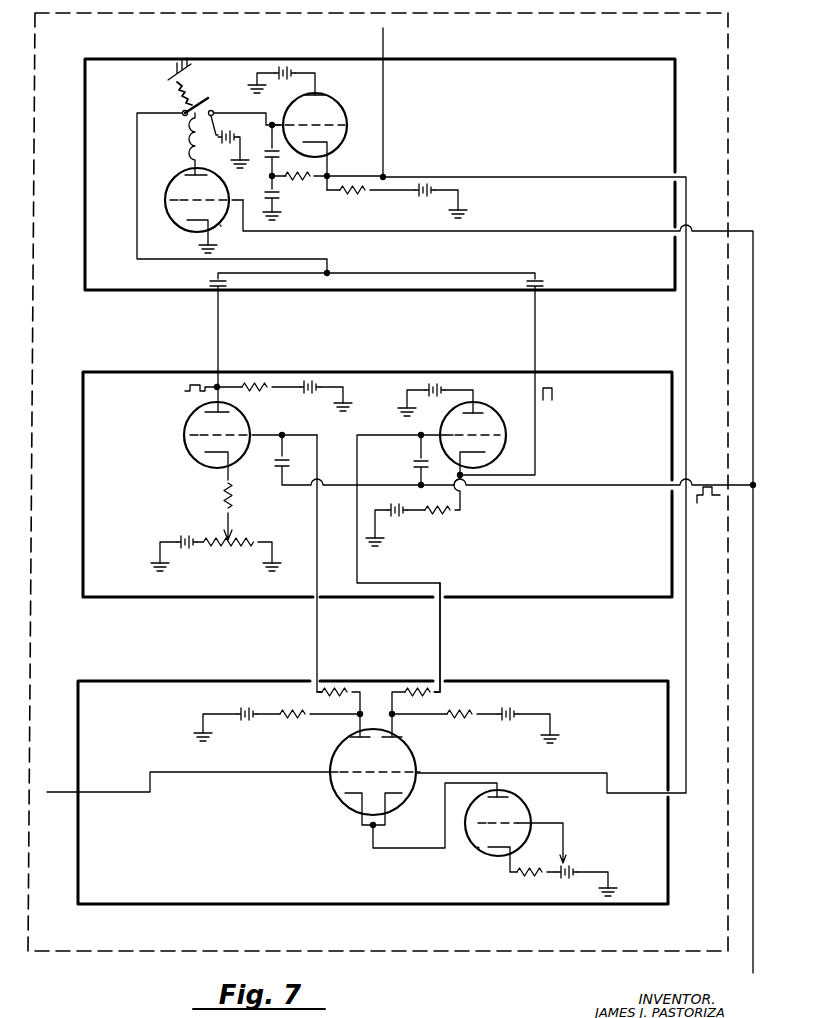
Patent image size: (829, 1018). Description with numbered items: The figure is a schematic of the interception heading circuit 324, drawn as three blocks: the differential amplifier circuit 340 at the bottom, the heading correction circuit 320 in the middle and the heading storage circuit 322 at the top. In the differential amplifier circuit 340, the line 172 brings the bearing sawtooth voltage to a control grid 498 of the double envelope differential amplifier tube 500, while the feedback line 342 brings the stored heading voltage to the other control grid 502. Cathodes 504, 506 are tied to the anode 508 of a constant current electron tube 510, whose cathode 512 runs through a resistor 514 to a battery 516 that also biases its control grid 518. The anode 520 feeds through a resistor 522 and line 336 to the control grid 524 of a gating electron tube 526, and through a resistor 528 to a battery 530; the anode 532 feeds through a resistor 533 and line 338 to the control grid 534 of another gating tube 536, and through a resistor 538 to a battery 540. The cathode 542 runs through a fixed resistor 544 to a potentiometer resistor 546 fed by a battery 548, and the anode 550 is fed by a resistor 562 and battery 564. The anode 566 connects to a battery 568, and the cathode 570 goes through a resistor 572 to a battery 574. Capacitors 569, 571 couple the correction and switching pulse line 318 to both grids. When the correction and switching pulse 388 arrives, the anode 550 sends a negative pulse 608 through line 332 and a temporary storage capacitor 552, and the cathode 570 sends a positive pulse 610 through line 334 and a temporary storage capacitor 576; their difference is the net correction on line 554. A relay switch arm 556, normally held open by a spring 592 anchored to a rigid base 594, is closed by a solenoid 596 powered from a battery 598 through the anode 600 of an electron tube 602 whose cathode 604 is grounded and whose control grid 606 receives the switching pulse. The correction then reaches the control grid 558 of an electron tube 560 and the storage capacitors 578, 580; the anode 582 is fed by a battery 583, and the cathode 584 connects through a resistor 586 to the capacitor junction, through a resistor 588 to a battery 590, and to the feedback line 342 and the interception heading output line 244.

The line 172 is at (48, 795).
The interception heading output line 244 is at (386, 50).
The correction and switching pulse line 318 is at (545, 231).
The heading correction circuit 320 is at (562, 598).
The heading storage circuit 322 is at (602, 291).
The interception heading circuit 324 is at (412, 953).
The line 332 is at (218, 338).
The line 334 is at (537, 345).
The line 336 is at (317, 655).
The line 338 is at (440, 650).
The differential amplifier circuit 340 is at (590, 905).
The feedback line 342 is at (545, 178).
The correction and switching pulse 388 is at (698, 504).
The control grid 498 is at (332, 763).
The double envelope differential amplifier tube 500 is at (331, 788).
The control grid 502 is at (408, 772).
The cathode 504 is at (350, 808).
The cathode 506 is at (390, 805).
The anode 508 is at (506, 797).
The constant current electron tube 510 is at (478, 848).
The cathode 512 is at (500, 860).
The resistor 514 is at (530, 878).
The battery 516 is at (580, 868).
The control grid 518 is at (520, 823).
The anode 520 is at (349, 740).
The resistor 522 is at (328, 688).
The control grid 524 is at (234, 435).
The gating electron tube 526 is at (185, 440).
The resistor 528 is at (297, 708).
The battery 530 is at (238, 712).
The anode 532 is at (403, 740).
The resistor 533 is at (404, 688).
The control grid 534 is at (438, 435).
The gating tube 536 is at (498, 455).
The resistor 538 is at (460, 710).
The battery 540 is at (518, 712).
The cathode 542 is at (208, 456).
The fixed resistor 544 is at (232, 503).
The potentiometer resistor 546 is at (240, 542).
The battery 548 is at (185, 551).
The anode 550 is at (185, 418).
The temporary storage capacitor 552 is at (209, 277).
The line 554 is at (137, 240).
The relay switch arm 556 is at (207, 95).
The control grid 558 is at (342, 126).
The electron tube 560 is at (335, 143).
The resistor 562 is at (258, 382).
The battery 564 is at (320, 380).
The anode 566 is at (478, 411).
The battery 568 is at (445, 380).
The capacitor 569 is at (276, 462).
The cathode 570 is at (458, 466).
The capacitor 571 is at (414, 463).
The resistor 572 is at (455, 513).
The battery 574 is at (398, 520).
The temporary storage capacitor 576 is at (540, 282).
The storage capacitor 578 is at (265, 160).
The storage capacitor 580 is at (270, 200).
The anode 582 is at (338, 100).
The battery 583 is at (285, 60).
The cathode 584 is at (330, 160).
The resistor 586 is at (308, 183).
The resistor 588 is at (360, 196).
The battery 590 is at (448, 188).
The spring 592 is at (175, 90).
The rigid base 594 is at (169, 74).
The solenoid 596 is at (190, 137).
The battery 598 is at (230, 136).
The anode 600 is at (185, 173).
The electron tube 602 is at (222, 226).
The cathode 604 is at (202, 230).
The control grid 606 is at (172, 200).
The negative pulse 608 is at (185, 391).
The positive pulse 610 is at (557, 401).